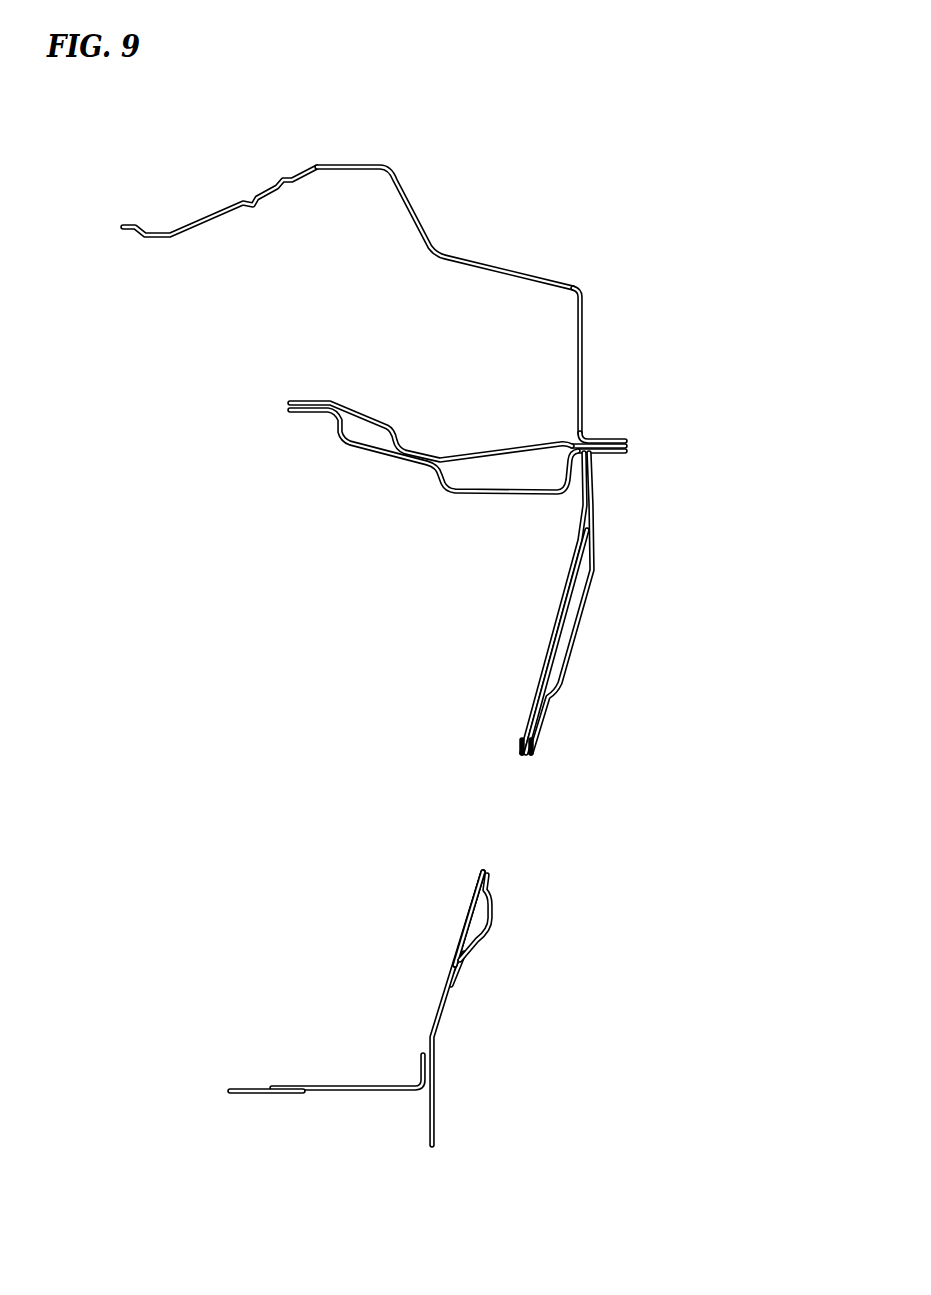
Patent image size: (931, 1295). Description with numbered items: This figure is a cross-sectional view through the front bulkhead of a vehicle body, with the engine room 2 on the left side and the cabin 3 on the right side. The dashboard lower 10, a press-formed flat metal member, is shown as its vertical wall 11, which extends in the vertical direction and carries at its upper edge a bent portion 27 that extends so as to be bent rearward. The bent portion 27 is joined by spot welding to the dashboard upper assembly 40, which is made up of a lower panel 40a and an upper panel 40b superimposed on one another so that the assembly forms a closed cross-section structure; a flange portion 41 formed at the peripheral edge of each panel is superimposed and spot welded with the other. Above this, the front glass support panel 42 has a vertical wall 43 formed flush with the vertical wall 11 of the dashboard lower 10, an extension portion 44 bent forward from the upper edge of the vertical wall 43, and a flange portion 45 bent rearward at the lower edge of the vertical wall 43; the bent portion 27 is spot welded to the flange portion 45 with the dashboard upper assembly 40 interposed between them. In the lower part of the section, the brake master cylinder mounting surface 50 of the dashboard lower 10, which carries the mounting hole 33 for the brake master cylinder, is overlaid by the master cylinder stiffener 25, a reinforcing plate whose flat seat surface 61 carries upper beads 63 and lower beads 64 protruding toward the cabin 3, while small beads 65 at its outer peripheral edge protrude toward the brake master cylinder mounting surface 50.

The engine room 2 is at (295, 752).
The cabin 3 is at (782, 752).
The dashboard lower 10 is at (406, 1008).
The vertical wall 11 is at (469, 918).
The master cylinder stiffener 25 is at (540, 728).
The bent portion 27 is at (623, 451).
The mounting hole 33 is at (520, 750).
The dashboard upper assembly 40 is at (387, 474).
The lower panel 40a is at (477, 492).
The upper panel 40b is at (518, 440).
The flange portion 41 is at (655, 439).
The front glass support panel 42 is at (398, 277).
The vertical wall 43 is at (585, 352).
The extension portion 44 is at (257, 195).
The flange portion 45 is at (605, 435).
The brake master cylinder mounting surface 50 is at (467, 912).
The seat surface 61 is at (540, 718).
The upper beads 63 is at (583, 622).
The lower beads 64 is at (491, 922).
The small beads 65 is at (598, 520).